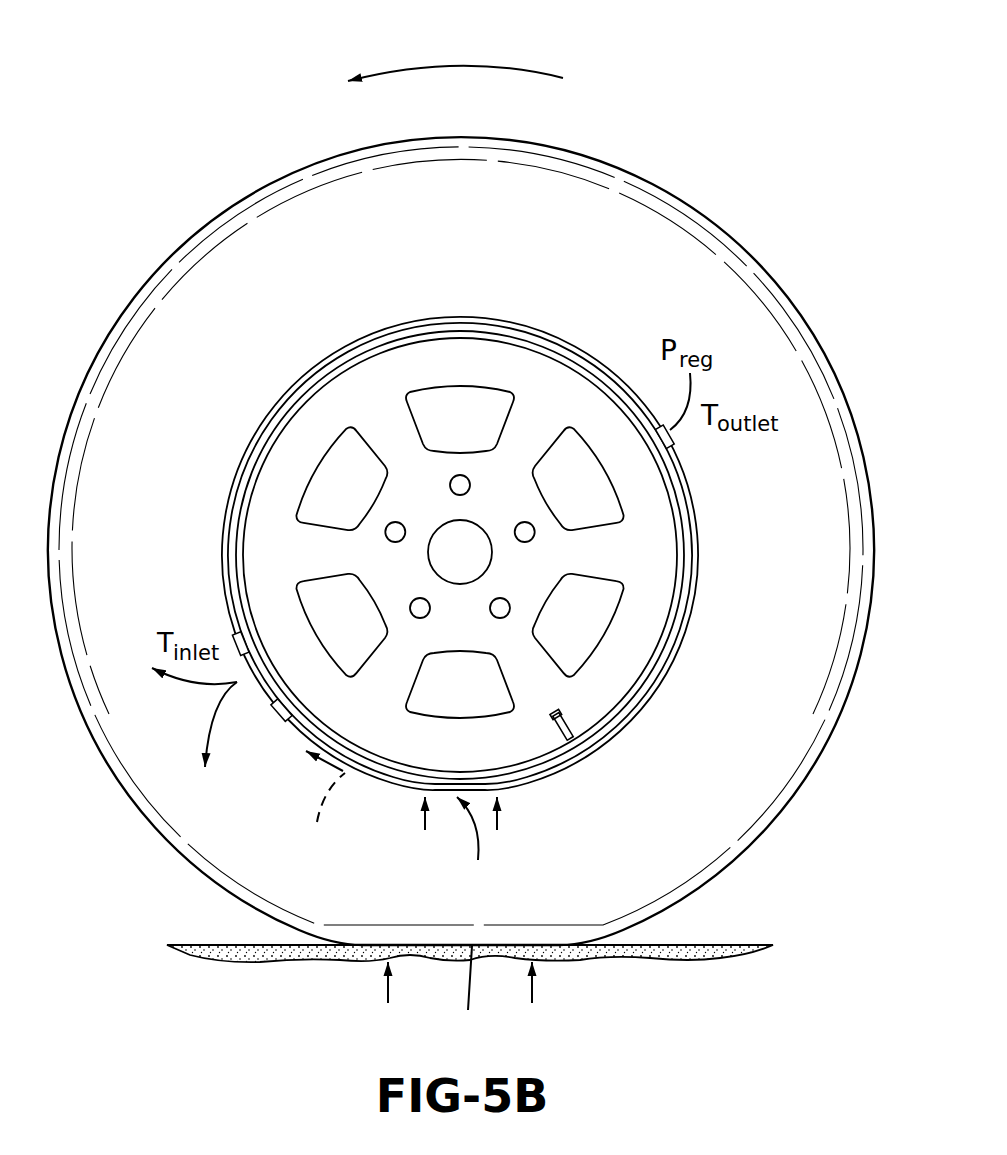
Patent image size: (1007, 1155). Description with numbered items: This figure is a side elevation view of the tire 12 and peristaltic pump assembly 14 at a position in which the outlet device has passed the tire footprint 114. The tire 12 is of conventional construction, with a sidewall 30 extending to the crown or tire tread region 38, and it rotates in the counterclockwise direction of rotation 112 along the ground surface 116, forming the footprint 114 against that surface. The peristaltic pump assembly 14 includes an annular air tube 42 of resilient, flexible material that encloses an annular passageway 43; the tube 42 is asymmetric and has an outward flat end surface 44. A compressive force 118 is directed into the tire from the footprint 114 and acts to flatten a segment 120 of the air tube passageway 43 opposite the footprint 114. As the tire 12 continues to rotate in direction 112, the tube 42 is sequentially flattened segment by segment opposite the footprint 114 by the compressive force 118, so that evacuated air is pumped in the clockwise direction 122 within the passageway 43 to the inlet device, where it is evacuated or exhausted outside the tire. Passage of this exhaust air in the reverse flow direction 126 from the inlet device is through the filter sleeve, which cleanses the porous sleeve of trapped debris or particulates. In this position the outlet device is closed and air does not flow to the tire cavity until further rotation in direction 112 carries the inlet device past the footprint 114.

The tire 12 is at (461, 533).
The peristaltic pump assembly 14 is at (479, 553).
The sidewall 30 is at (572, 238).
The tire tread region 38 is at (661, 186).
The annular air tube 42 is at (678, 669).
The annular passageway 43 is at (272, 408).
The outward flat end surface 44 is at (247, 683).
The direction of rotation 112 is at (536, 72).
The footprint 114 is at (463, 992).
The ground surface 116 is at (742, 945).
The compressive force 118 is at (424, 822).
The flattened segment 120 is at (477, 843).
The air pumping direction 122 is at (317, 800).
The exhaust air flow direction 126 is at (178, 688).